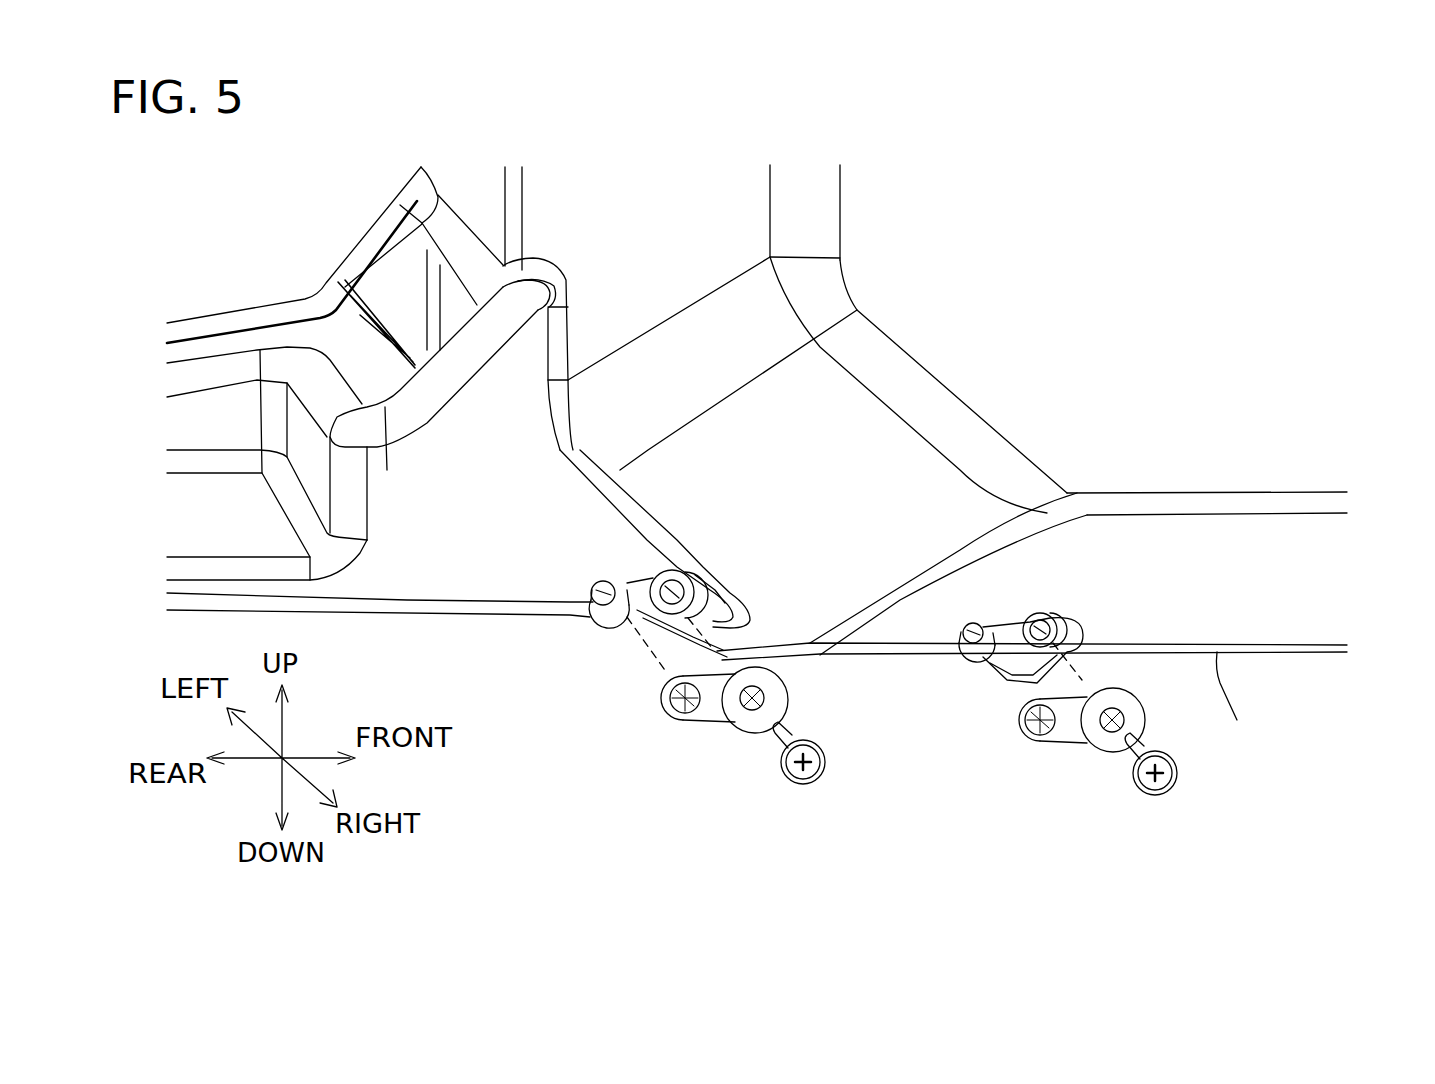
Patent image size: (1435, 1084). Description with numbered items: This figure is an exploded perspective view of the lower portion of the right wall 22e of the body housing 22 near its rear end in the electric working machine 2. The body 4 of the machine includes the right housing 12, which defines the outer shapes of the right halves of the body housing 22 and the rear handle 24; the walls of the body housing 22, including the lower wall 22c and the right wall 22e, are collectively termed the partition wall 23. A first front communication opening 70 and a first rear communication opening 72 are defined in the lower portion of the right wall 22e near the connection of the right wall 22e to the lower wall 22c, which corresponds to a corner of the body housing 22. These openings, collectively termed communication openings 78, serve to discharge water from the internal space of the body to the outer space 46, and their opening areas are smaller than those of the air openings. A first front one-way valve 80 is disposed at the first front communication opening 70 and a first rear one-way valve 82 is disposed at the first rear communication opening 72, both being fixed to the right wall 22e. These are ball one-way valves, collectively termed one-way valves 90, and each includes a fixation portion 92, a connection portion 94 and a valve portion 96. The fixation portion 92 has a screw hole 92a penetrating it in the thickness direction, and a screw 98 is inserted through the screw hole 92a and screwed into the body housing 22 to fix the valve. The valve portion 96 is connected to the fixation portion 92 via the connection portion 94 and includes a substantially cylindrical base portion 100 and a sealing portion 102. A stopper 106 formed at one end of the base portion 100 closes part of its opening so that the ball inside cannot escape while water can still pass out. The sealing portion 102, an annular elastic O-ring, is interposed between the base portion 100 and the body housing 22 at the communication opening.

The electric working machine 2 is at (443, 823).
The body 4 is at (530, 787).
The right housing 12 is at (1225, 532).
The body housing 22 is at (1250, 542).
The lower wall 22c is at (1237, 720).
The right wall 22e is at (1225, 622).
The partition wall 23 is at (1250, 610).
The rear handle 24 is at (223, 368).
The outer space 46 is at (486, 627).
The first front communication opening 70 is at (980, 620).
The first rear communication opening 72 is at (618, 583).
The communication openings 78 is at (740, 125).
The first front one-way valve 80 is at (1150, 687).
The first rear one-way valve 82 is at (798, 682).
The one-way valves 90 is at (918, 125).
The fixation portion 92 is at (750, 735).
The screw hole 92a is at (753, 698).
The connection portion 94 is at (717, 727).
The valve portion 96 is at (862, 546).
The screw 98 is at (807, 780).
The base portion 100 is at (667, 690).
The sealing portion 102 is at (678, 578).
The stopper 106 is at (690, 722).